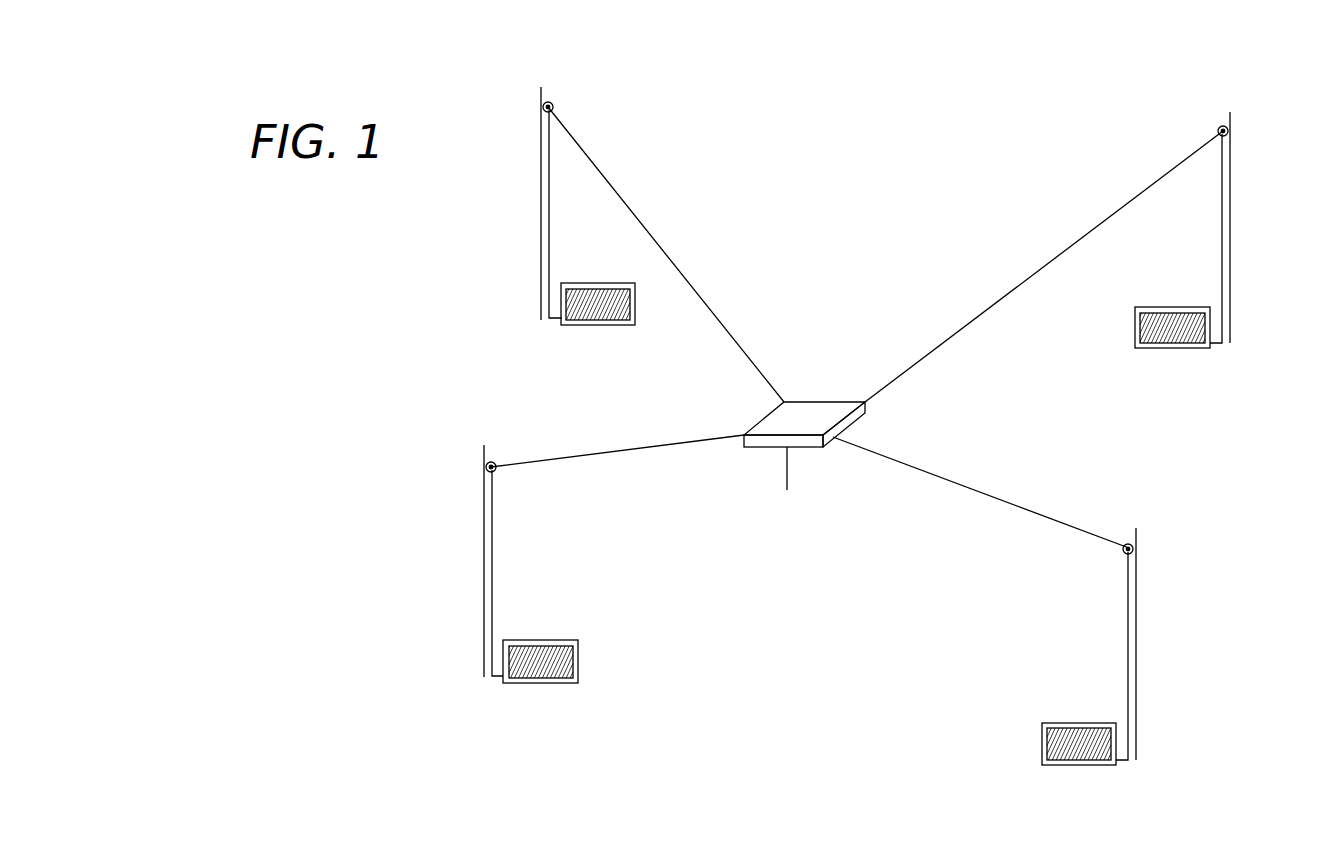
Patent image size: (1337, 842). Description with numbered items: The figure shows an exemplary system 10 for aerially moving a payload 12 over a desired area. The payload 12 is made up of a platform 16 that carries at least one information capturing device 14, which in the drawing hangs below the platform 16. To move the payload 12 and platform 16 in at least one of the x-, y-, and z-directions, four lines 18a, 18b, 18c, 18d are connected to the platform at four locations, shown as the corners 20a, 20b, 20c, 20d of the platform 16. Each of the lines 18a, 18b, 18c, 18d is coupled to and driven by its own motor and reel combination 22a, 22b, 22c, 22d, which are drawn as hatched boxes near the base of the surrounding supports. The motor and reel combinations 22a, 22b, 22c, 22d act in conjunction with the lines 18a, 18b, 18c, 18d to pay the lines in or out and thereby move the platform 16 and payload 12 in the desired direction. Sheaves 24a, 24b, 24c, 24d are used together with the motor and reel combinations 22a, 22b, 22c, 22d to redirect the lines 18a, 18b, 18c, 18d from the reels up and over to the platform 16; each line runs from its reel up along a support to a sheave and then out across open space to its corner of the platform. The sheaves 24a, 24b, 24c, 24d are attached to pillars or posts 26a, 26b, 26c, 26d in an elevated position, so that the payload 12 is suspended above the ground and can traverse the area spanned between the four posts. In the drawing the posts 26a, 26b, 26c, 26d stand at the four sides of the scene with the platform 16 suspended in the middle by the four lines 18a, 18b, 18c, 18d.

The system 10 is at (968, 66).
The payload 12 is at (852, 397).
The information capturing device 14 is at (789, 475).
The platform 16 is at (825, 400).
The line 18a is at (654, 236).
The line 18b is at (1022, 281).
The line 18c is at (987, 490).
The line 18d is at (606, 446).
The corner 20a is at (785, 400).
The corner 20b is at (865, 400).
The corner 20c is at (834, 444).
The corner 20d is at (738, 438).
The motor and reel combination 22a is at (601, 326).
The motor and reel combination 22b is at (1170, 349).
The motor and reel combination 22c is at (1042, 746).
The motor and reel combination 22d is at (578, 665).
The sheave 24a is at (553, 103).
The sheave 24b is at (1219, 127).
The sheave 24c is at (1130, 543).
The sheave 24d is at (494, 462).
The post 26a is at (541, 203).
The post 26b is at (1231, 222).
The post 26c is at (1137, 670).
The post 26d is at (484, 575).